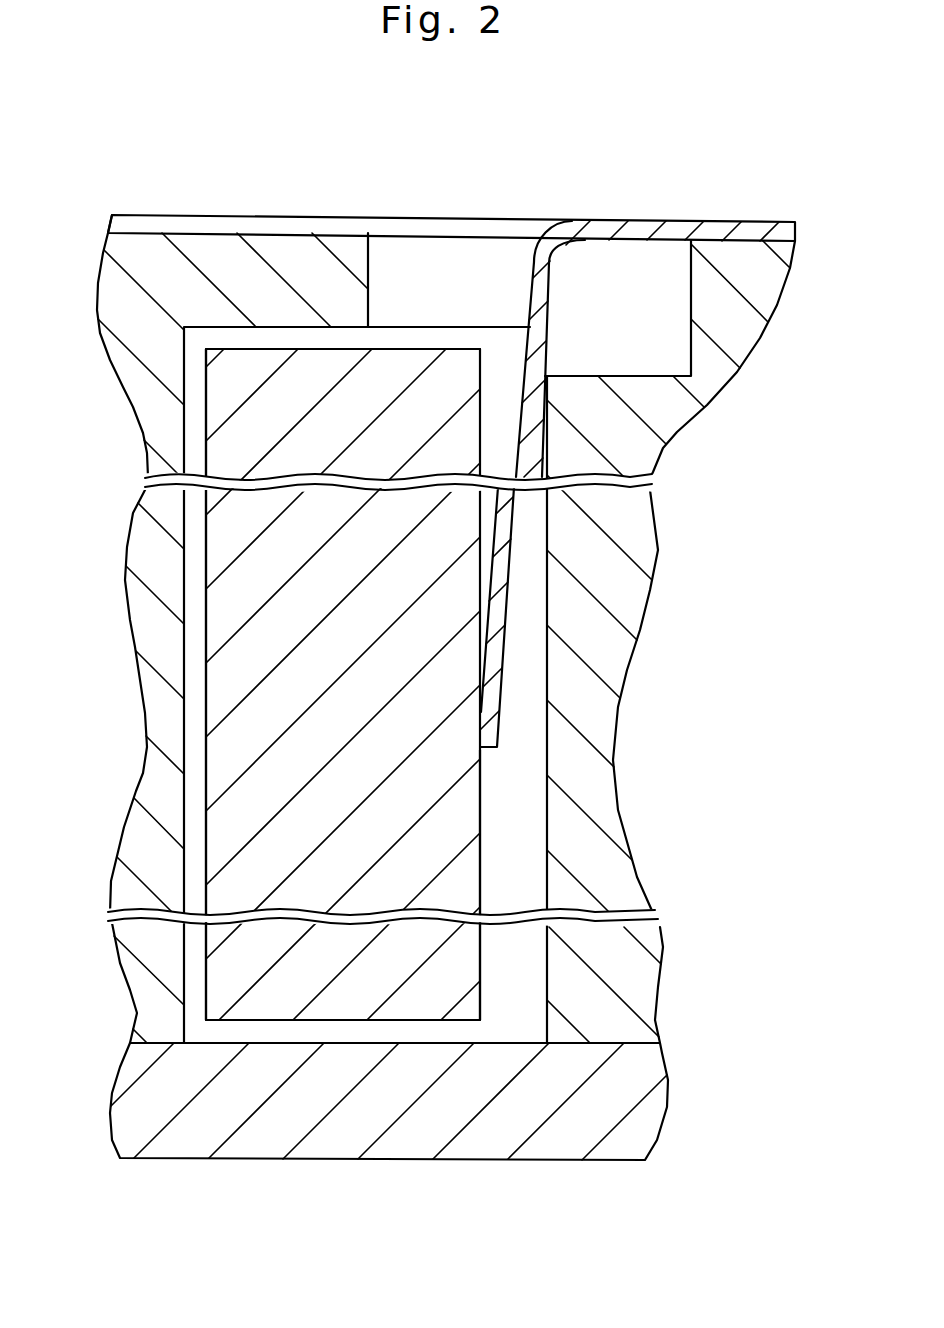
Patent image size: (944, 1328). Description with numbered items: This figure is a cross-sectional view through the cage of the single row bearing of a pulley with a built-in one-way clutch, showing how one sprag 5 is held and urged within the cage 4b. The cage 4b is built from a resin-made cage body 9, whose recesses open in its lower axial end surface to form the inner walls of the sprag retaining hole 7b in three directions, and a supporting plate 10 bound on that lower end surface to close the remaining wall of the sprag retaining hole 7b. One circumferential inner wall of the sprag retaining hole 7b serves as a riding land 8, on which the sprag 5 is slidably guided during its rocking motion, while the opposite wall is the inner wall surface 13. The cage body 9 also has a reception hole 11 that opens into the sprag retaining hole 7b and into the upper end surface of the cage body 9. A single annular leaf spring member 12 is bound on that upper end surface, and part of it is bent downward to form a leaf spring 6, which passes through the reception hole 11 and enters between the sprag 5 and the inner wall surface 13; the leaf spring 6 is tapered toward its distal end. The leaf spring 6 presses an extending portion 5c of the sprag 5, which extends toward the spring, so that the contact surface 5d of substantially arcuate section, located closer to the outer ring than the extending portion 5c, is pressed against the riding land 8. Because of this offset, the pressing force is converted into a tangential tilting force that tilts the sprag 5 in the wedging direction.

The cage 4b is at (466, 1041).
The sprag 5 is at (493, 806).
The extending portion 5c is at (481, 870).
The contact surface 5d is at (166, 778).
The leaf spring 6 is at (512, 577).
The sprag retaining hole 7b is at (518, 1000).
The riding land 8 is at (180, 618).
The cage body 9 is at (665, 963).
The supporting plate 10 is at (434, 1100).
The reception hole 11 is at (466, 242).
The annular leaf spring member 12 is at (517, 222).
The inner wall surface 13 is at (548, 675).